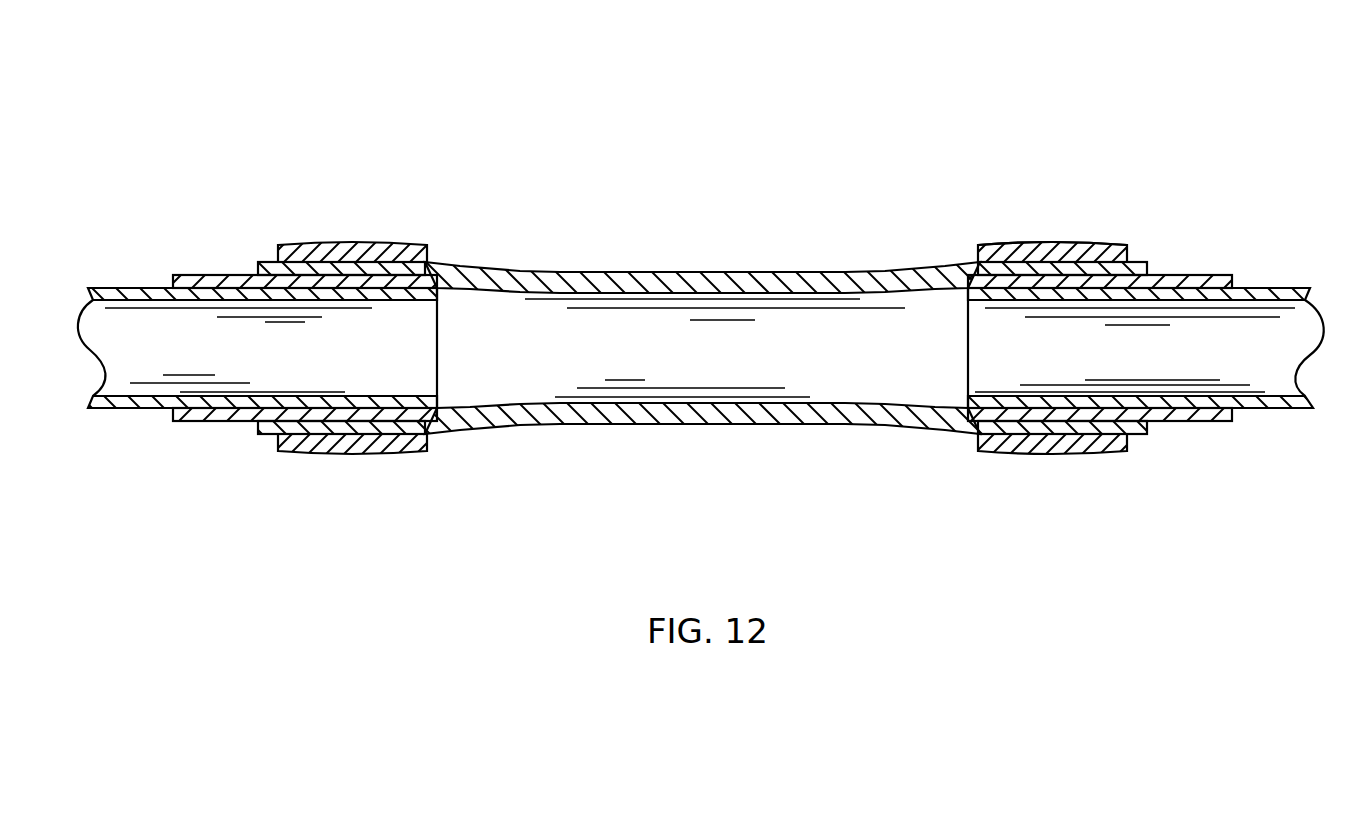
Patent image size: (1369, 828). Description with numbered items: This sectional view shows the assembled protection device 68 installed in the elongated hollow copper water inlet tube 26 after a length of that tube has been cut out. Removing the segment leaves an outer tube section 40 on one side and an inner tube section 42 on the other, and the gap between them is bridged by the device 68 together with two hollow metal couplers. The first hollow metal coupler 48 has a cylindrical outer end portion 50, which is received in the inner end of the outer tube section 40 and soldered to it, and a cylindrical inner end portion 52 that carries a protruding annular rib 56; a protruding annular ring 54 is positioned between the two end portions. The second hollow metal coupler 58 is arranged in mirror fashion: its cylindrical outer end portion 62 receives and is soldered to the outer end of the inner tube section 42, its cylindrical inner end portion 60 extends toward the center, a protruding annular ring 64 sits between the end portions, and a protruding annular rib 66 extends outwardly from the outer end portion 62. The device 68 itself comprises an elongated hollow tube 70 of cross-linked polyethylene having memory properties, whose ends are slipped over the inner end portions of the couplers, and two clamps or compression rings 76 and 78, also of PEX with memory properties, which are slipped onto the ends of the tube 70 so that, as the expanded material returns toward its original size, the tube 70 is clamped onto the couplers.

The water inlet tube 26 is at (110, 268).
The outer tube section 40 is at (135, 405).
The inner tube section 42 is at (1268, 408).
The hollow metal coupler 48 is at (227, 421).
The cylindrical outer end portion 50 is at (298, 434).
The cylindrical inner end portion 52 is at (203, 275).
The protruding annular ring 54 is at (268, 262).
The protruding annular rib 56 is at (365, 262).
The second hollow metal coupler 58 is at (1213, 275).
The cylindrical inner end portion 60 is at (1032, 455).
The cylindrical outer end portion 62 is at (1188, 421).
The protruding annular ring 64 is at (1143, 262).
The protruding annular rib 66 is at (1005, 243).
The protection device 68 is at (782, 212).
The elongated hollow tube 70 is at (663, 270).
The compression ring 76 is at (343, 243).
The compression ring 78 is at (1078, 243).